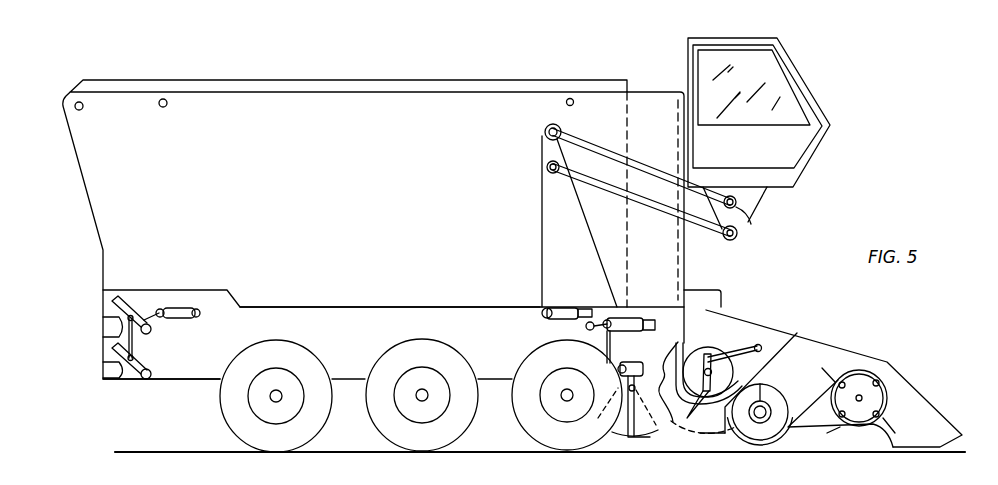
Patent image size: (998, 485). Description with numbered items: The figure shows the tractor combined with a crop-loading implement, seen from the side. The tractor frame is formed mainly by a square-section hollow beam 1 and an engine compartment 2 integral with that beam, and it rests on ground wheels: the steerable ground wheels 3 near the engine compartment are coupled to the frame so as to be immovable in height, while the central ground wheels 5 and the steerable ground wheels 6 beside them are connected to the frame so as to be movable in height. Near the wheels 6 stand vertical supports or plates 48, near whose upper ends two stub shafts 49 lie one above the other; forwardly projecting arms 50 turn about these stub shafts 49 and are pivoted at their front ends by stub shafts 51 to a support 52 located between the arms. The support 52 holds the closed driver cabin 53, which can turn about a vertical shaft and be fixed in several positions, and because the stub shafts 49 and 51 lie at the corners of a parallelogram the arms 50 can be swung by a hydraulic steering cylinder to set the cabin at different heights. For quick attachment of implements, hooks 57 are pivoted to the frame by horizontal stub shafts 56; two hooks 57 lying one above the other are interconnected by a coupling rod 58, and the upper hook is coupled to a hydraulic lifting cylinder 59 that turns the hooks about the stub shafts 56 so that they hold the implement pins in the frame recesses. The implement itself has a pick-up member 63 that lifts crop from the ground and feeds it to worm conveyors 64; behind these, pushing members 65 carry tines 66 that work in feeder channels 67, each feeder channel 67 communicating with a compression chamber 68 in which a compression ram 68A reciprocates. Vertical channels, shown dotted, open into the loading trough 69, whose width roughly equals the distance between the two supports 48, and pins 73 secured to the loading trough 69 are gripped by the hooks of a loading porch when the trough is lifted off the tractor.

The square-section hollow beam 1 is at (407, 313).
The engine compartment 2 is at (203, 373).
The ground wheels 3 is at (233, 422).
The central ground wheels 5 is at (375, 420).
The ground wheels 6 is at (525, 412).
The vertical supports or plates 48 is at (542, 244).
The stub shafts 49 is at (543, 143).
The forwardly projecting arms 50 is at (638, 188).
The stub shafts 51 is at (753, 227).
The support 52 is at (765, 197).
The driver cabin 53 is at (688, 63).
The stub shafts 56 is at (586, 326).
The hooks 57 is at (125, 303).
The coupling rod 58 is at (135, 347).
The hydraulic lifting cylinder 59 is at (186, 306).
The pick-up member 63 is at (862, 378).
The worm conveyors 64 is at (772, 394).
The pushing members 65 is at (703, 352).
The tines 66 is at (706, 432).
The feeder channels 67 is at (692, 424).
The compression chamber 68 is at (672, 367).
The compression ram 68A is at (622, 425).
The loading trough 69 is at (413, 97).
The pins 73 is at (168, 104).